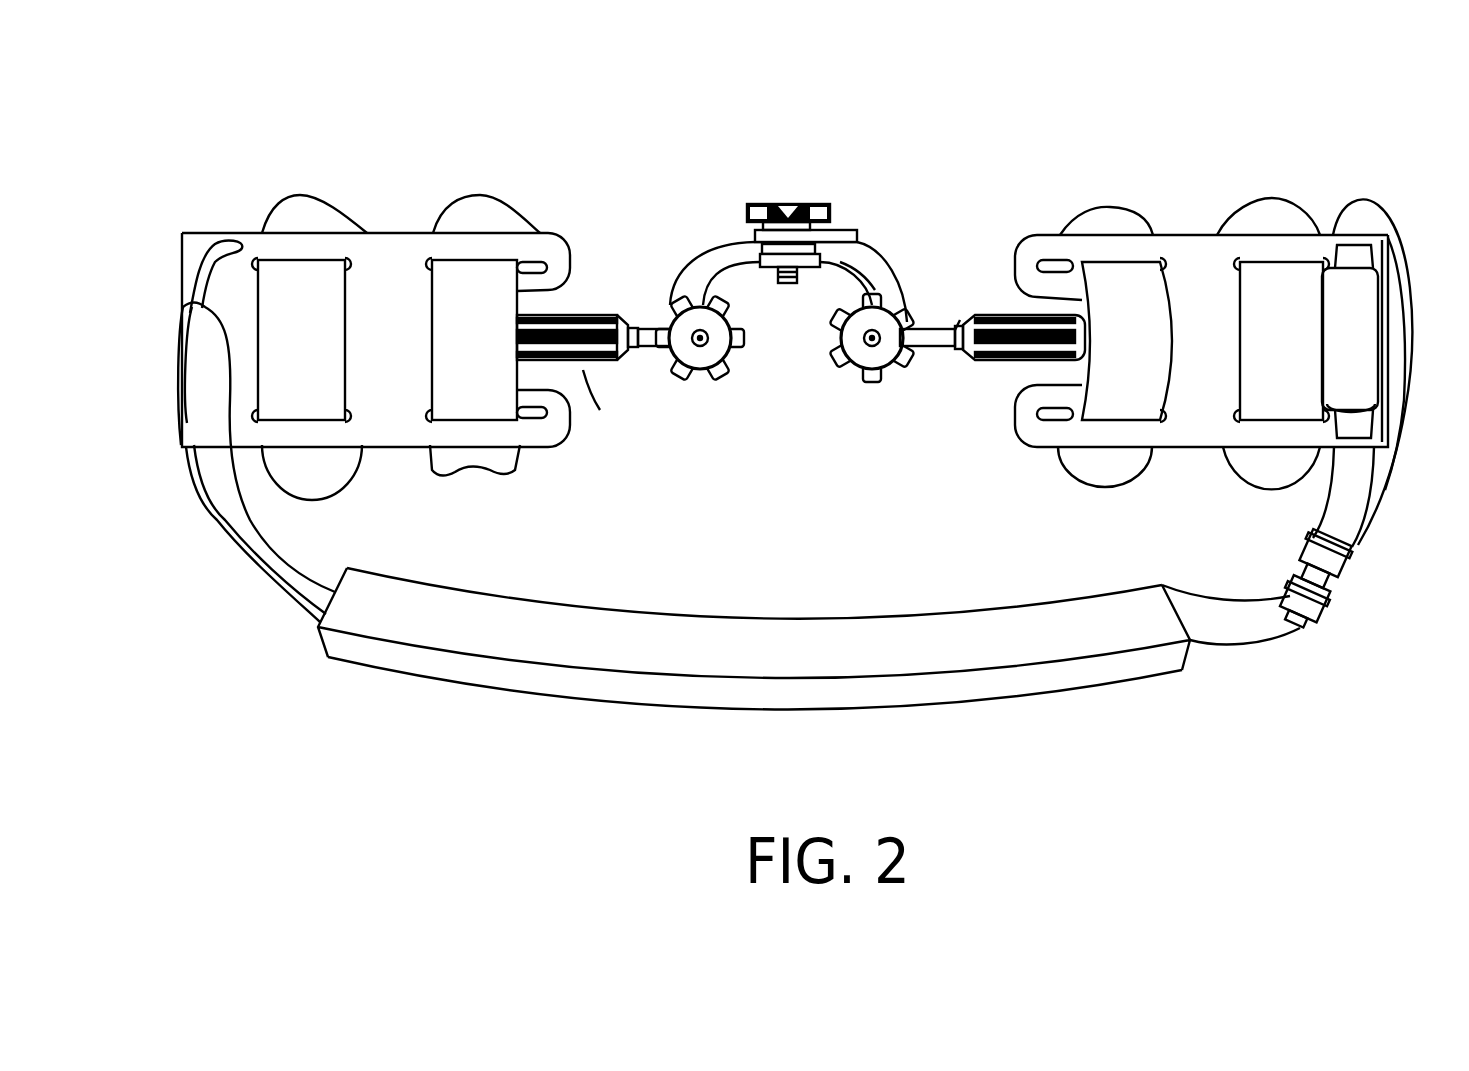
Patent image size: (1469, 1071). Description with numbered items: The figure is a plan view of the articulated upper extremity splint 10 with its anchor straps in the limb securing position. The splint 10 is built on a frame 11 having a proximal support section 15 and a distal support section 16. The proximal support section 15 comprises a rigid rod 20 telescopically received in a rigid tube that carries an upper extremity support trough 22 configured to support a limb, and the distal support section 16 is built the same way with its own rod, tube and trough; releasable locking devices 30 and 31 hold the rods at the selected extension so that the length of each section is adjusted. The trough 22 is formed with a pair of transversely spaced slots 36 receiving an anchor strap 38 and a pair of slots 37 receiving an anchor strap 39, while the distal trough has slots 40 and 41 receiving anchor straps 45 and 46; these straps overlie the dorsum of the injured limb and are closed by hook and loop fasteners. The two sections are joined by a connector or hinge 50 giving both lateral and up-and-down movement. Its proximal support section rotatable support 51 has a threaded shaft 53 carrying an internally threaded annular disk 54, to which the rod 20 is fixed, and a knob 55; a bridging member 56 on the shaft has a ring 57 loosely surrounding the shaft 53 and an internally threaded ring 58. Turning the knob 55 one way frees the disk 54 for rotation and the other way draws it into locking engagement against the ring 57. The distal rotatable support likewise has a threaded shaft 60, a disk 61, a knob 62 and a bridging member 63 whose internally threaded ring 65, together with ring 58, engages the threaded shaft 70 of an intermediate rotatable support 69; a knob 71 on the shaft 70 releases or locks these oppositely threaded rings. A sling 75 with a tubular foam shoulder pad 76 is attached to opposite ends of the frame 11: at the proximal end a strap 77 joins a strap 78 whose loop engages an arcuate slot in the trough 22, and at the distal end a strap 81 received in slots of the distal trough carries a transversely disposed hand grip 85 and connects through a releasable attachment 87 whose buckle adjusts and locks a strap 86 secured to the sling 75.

The articulated upper extremity splint 10 is at (647, 148).
The frame 11 is at (399, 217).
The proximal support section 15 is at (397, 458).
The distal support section 16 is at (1192, 197).
The rigid rod 20 is at (640, 350).
The upper extremity support trough 22 is at (975, 300).
The releasable locking device 30 is at (590, 315).
The releasable locking device 31 is at (1000, 362).
The transversely spaced slots 36 is at (348, 272).
The transversely spaced slots 37 is at (537, 282).
The anchor strap 38 is at (300, 207).
The anchor strap 39 is at (485, 207).
The transversely spaced slots 40 is at (1237, 272).
The transversely spaced slots 41 is at (1095, 275).
The anchor strap 45 is at (1275, 205).
The anchor strap 46 is at (1105, 215).
The connector or hinge 50 is at (763, 196).
The proximal support section rotatable support 51 is at (868, 384).
The threaded shaft 53 is at (700, 330).
The internally threaded annular disk 54 is at (722, 360).
The knob 55 is at (735, 345).
The bridging member 56 is at (818, 272).
The ring 57 is at (705, 380).
The ring 58 is at (760, 272).
The threaded shaft 60 is at (843, 368).
The internally threaded annular disk 61 is at (900, 335).
The knob 62 is at (895, 380).
The bridging member 63 is at (885, 278).
The ring 65 is at (745, 238).
The intermediate rotatable support 69 is at (783, 206).
The threaded shaft 70 is at (790, 284).
The knob 71 is at (756, 228).
The sling 75 is at (388, 666).
The shoulder pad 76 is at (203, 280).
The strap 77 is at (272, 577).
The strap 78 is at (175, 380).
The strap 81 is at (1360, 503).
The hand grip 85 is at (1370, 362).
The strap 86 is at (1240, 627).
The releasable attachment 87 is at (1302, 568).